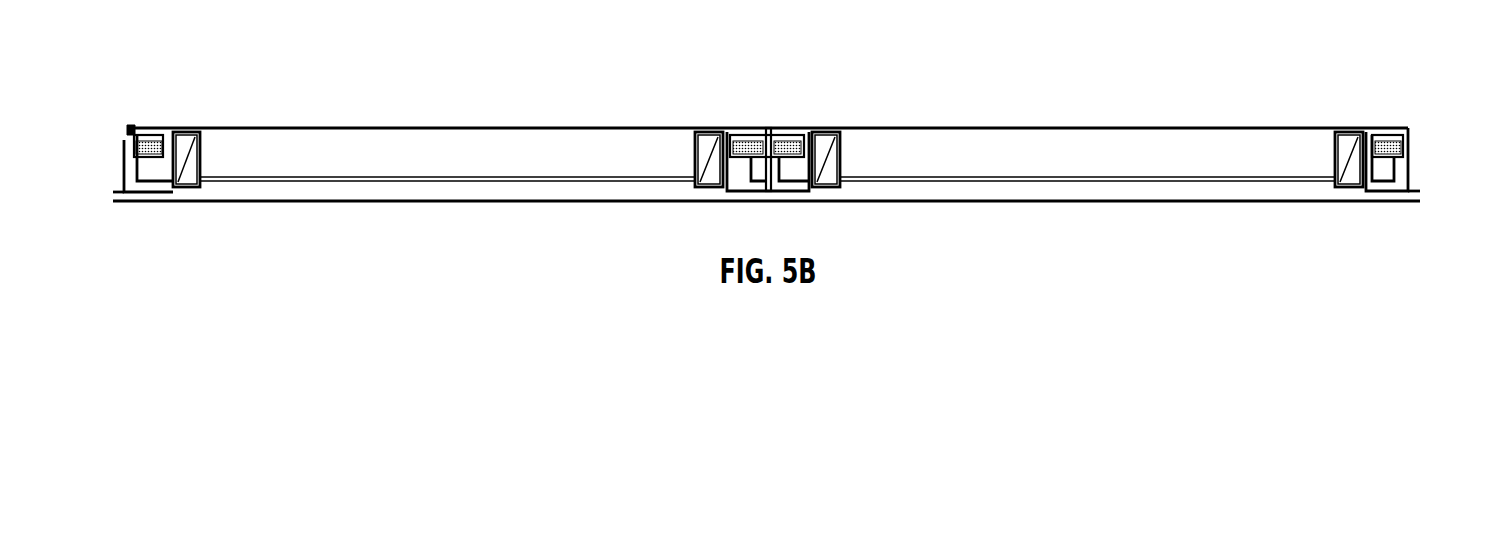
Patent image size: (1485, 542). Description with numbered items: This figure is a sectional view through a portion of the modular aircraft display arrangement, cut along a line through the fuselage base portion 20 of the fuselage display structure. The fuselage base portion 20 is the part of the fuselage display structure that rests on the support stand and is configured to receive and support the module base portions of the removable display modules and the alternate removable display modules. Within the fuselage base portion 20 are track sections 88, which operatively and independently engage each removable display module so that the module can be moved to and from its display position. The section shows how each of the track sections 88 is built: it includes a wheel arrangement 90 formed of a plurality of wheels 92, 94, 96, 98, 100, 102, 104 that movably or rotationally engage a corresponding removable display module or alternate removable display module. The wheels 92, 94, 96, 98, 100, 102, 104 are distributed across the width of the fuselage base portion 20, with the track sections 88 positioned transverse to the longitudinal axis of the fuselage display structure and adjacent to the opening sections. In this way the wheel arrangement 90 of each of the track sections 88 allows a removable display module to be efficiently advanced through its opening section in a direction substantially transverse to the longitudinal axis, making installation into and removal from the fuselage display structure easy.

The fuselage base portion 20 is at (1256, 94).
The track sections 88 is at (186, 122).
The wheel arrangement 90 is at (151, 82).
The wheel 92 is at (133, 128).
The wheel 94 is at (188, 153).
The wheel 96 is at (703, 155).
The wheel 98 is at (753, 153).
The wheel 100 is at (833, 147).
The wheel 102 is at (1347, 173).
The wheel 104 is at (1405, 150).